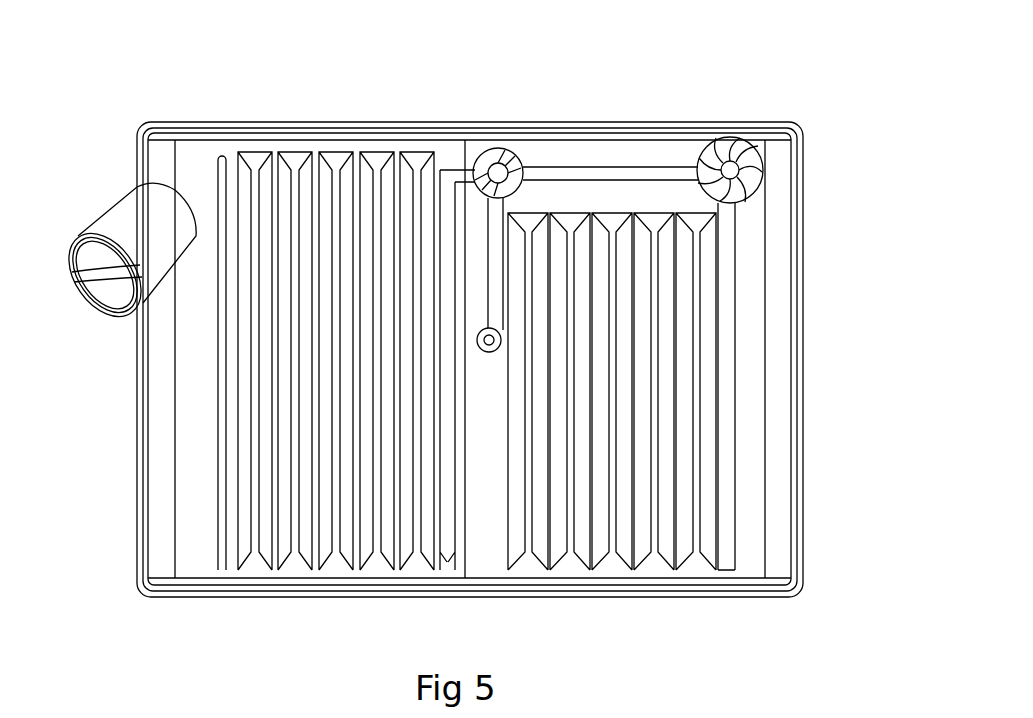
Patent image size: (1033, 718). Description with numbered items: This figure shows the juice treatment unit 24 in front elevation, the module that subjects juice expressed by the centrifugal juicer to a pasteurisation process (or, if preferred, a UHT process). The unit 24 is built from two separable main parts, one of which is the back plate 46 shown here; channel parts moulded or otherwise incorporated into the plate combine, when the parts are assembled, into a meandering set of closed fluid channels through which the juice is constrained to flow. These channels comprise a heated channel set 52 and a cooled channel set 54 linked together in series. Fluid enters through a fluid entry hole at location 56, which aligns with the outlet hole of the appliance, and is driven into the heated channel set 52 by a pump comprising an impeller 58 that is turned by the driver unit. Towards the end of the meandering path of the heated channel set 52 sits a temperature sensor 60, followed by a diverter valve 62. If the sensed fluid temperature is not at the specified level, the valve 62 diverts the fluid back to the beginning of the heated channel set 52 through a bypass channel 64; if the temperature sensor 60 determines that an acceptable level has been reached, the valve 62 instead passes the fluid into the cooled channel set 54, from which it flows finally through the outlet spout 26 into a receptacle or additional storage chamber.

The juice treatment unit 24 is at (112, 422).
The outlet spout 26 is at (130, 226).
The back plate 46 is at (340, 118).
The heated channel set 52 is at (690, 355).
The cooled channel set 54 is at (288, 232).
The fluid entry hole location 56 is at (733, 116).
The impeller 58 is at (754, 181).
The temperature sensor 60 is at (497, 346).
The diverter valve 62 is at (497, 147).
The bypass channel 64 is at (612, 166).